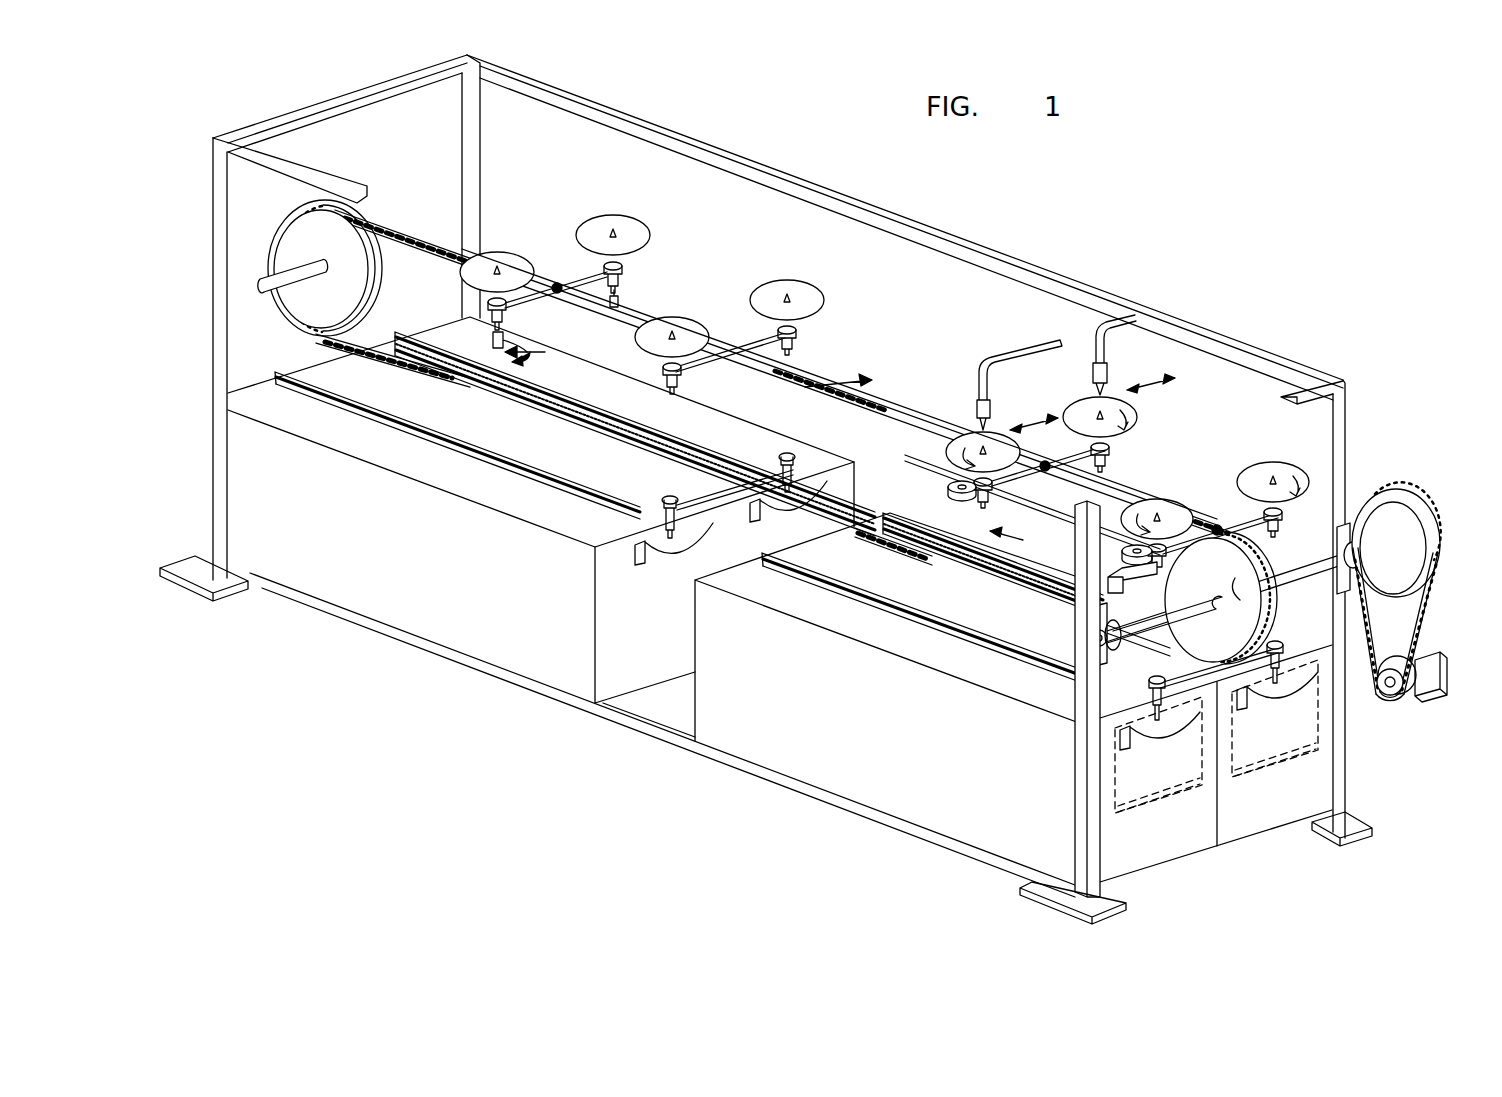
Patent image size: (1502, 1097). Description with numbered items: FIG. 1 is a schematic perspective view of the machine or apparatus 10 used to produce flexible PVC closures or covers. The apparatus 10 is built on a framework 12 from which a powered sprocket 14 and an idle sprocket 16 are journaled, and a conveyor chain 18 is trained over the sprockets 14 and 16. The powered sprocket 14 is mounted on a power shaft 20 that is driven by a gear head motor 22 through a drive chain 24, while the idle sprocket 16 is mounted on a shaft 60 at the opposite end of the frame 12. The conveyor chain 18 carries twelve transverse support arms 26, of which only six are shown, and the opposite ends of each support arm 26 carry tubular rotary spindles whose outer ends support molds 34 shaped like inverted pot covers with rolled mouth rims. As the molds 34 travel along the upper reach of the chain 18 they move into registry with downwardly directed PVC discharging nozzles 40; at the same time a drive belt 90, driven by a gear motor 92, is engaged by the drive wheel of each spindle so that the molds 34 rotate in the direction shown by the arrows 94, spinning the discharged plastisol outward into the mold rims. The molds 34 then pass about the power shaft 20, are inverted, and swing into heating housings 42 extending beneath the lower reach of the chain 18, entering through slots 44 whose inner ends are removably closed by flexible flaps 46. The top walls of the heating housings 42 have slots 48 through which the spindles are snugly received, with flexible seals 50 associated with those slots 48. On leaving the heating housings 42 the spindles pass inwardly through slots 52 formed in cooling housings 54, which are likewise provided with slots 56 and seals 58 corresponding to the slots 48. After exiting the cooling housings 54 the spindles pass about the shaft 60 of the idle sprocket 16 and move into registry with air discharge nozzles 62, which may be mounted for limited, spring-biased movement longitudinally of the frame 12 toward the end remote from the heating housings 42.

The machine or apparatus 10 is at (884, 210).
The framework 12 is at (700, 140).
The powered sprocket 14 is at (1248, 560).
The idle sprocket 16 is at (307, 300).
The conveyor chain 18 is at (406, 222).
The power shaft 20 is at (1415, 540).
The gear head motor 22 is at (1363, 684).
The drive chain 24 is at (1427, 620).
The transverse support arm 26 is at (747, 325).
The mold 34 is at (825, 300).
The PVC discharging nozzle 40 is at (977, 417).
The heating housing 42 is at (1245, 827).
The slot 44 is at (1133, 747).
The flexible flap 46 is at (1115, 764).
The slot 48 is at (1277, 652).
The flexible seal 50 is at (897, 597).
The slot 52 is at (640, 562).
The cooling housing 54 is at (322, 514).
The slot 56 is at (640, 526).
The seal 58 is at (555, 467).
The shaft 60 is at (265, 282).
The air discharge nozzle 62 is at (617, 302).
The drive belt 90 is at (1048, 520).
The gear motor 92 is at (1063, 580).
The arrows 94 is at (1135, 408).